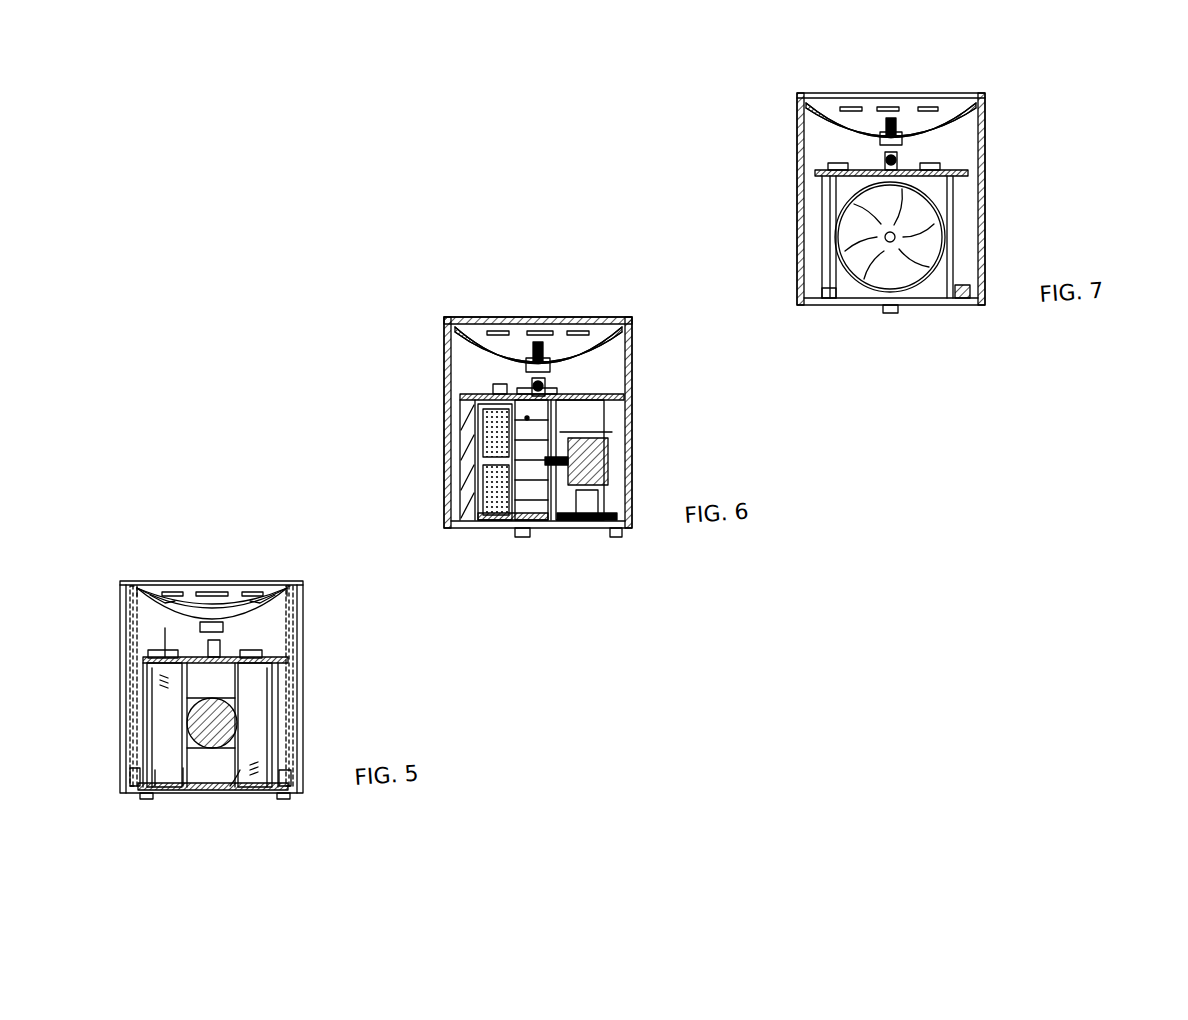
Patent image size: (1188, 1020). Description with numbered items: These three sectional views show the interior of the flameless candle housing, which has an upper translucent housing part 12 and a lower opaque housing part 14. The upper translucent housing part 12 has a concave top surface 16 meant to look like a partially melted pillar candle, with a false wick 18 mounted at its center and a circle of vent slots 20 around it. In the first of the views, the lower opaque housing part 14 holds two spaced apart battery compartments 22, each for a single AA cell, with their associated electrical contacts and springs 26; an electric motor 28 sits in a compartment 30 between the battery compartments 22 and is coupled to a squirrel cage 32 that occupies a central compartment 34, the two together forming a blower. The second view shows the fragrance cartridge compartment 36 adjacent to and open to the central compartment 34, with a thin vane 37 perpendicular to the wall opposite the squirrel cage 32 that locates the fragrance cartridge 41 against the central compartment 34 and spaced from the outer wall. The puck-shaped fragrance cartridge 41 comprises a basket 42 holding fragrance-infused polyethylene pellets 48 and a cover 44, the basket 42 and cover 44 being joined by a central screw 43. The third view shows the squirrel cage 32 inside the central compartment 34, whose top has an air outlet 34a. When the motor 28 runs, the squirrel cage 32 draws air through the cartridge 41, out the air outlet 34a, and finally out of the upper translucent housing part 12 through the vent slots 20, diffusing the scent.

In FIG. 5, the upper translucent housing part 12 is at (303, 648).
In FIG. 6, the upper translucent housing part 12 is at (633, 395).
In FIG. 7, the upper translucent housing part 12 is at (985, 178).
In FIG. 5, the lower opaque housing part 14 is at (218, 794).
In FIG. 6, the lower opaque housing part 14 is at (557, 530).
In FIG. 7, the lower opaque housing part 14 is at (935, 305).
In FIG. 5, the concave top surface 16 is at (215, 604).
In FIG. 6, the concave top surface 16 is at (592, 345).
In FIG. 7, the concave top surface 16 is at (912, 123).
In FIG. 6, the false wick 18 is at (540, 345).
In FIG. 7, the false wick 18 is at (891, 120).
In FIG. 5, the vent slots 20 is at (208, 593).
In FIG. 6, the vent slots 20 is at (512, 345).
In FIG. 7, the vent slots 20 is at (858, 112).
In FIG. 5, the battery compartment 22 is at (226, 794).
In FIG. 5, the electrical contacts and springs 26 is at (182, 668).
In FIG. 5, the electric motor 28 is at (237, 720).
In FIG. 6, the electric motor 28 is at (602, 456).
In FIG. 5, the motor compartment 30 is at (200, 758).
In FIG. 6, the motor compartment 30 is at (600, 490).
In FIG. 6, the squirrel cage 32 is at (506, 530).
In FIG. 7, the squirrel cage 32 is at (850, 226).
In FIG. 6, the central compartment 34 is at (540, 530).
In FIG. 7, the central compartment 34 is at (858, 296).
In FIG. 7, the air outlet 34a is at (935, 170).
In FIG. 6, the fragrance cartridge compartment 36 is at (476, 488).
In FIG. 6, the thin vane 37 is at (458, 463).
In FIG. 6, the fragrance cartridge 41 is at (482, 528).
In FIG. 6, the basket 42 is at (463, 528).
In FIG. 6, the central screw 43 is at (473, 430).
In FIG. 6, the cover 44 is at (490, 410).
In FIG. 6, the fragrance-infused polyethylene pellets 48 is at (478, 500).